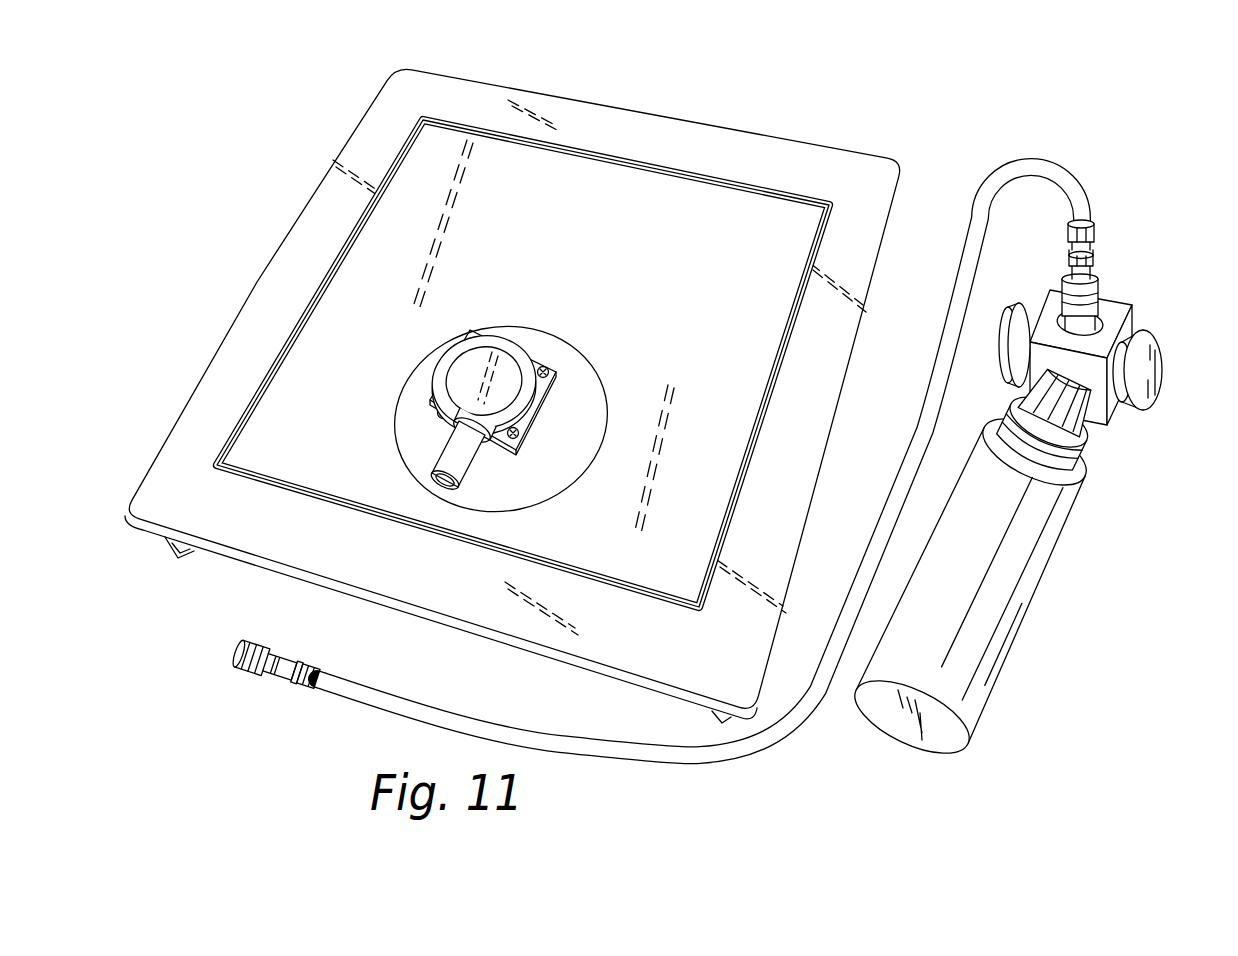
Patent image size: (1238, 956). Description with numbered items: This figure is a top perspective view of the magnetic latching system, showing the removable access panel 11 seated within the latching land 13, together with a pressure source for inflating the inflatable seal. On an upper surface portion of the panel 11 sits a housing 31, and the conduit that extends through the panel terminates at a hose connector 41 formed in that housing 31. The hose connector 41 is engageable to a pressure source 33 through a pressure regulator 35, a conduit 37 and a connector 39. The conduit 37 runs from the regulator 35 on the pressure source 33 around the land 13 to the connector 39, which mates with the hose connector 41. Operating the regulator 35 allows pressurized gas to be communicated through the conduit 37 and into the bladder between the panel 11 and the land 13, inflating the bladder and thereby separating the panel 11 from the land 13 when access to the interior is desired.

The removable access panel 11 is at (614, 175).
The latching land 13 is at (769, 140).
The housing 31 is at (476, 352).
The pressure source 33 is at (1069, 505).
The pressure regulator 35 is at (1158, 360).
The conduit 37 is at (626, 758).
The connector 39 is at (254, 680).
The hose connector 41 is at (435, 466).